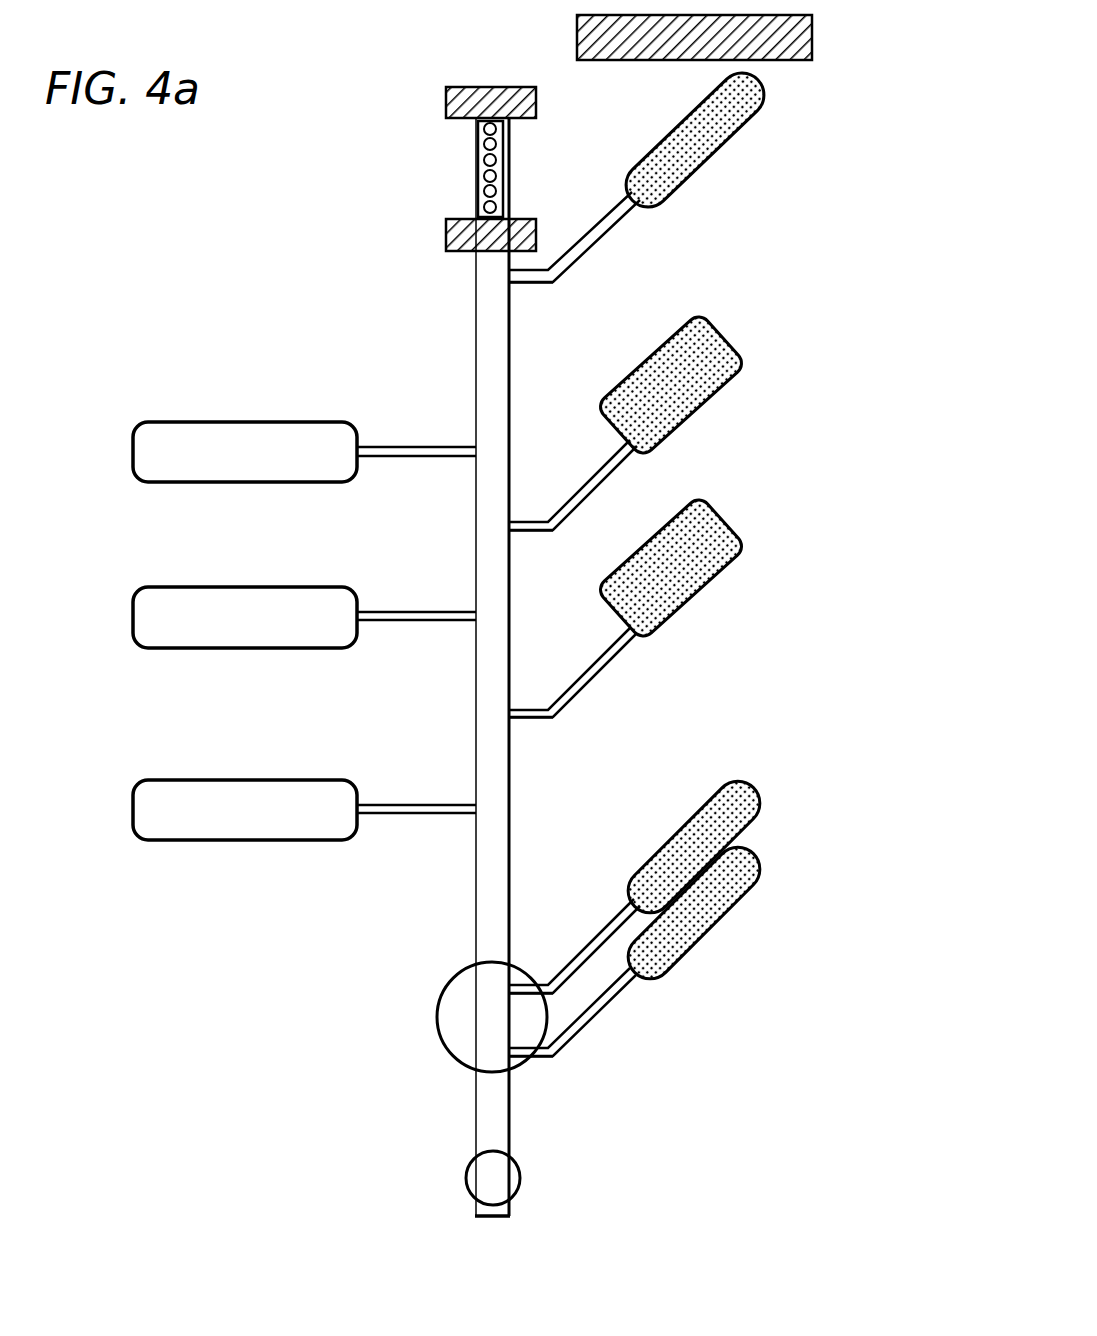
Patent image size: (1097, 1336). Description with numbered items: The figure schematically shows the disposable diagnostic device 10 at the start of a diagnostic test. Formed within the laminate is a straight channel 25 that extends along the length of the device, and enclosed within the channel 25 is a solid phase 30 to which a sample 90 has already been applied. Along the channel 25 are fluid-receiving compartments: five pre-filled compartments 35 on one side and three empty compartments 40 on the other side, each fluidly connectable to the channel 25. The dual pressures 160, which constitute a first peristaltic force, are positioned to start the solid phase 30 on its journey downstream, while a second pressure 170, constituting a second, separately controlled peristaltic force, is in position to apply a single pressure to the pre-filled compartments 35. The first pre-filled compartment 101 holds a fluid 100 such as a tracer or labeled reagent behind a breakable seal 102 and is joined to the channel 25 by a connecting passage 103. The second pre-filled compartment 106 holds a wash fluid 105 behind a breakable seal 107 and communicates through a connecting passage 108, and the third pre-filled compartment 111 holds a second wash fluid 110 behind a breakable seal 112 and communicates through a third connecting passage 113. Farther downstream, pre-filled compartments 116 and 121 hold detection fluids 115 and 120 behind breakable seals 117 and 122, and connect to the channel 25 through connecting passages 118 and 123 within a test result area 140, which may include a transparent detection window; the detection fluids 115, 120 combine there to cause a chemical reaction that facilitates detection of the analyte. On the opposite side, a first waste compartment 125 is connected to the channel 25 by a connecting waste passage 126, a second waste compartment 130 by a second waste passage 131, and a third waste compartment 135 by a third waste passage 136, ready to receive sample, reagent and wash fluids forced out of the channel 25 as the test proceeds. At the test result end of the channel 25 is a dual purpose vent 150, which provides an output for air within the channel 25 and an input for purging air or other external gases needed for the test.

The disposable diagnostic device 10 is at (290, 258).
The channel 25 is at (475, 332).
The solid phase 30 is at (496, 143).
The pre-filled compartment 35 is at (762, 83).
The empty compartment 40 is at (203, 422).
The sample 90 is at (498, 181).
The fluid 100 is at (735, 118).
The first pre-filled compartment 101 is at (708, 152).
The breakable seal 102 is at (578, 258).
The connecting passage 103 is at (531, 284).
The fluid 105 is at (708, 386).
The second pre-filled compartment 106 is at (690, 424).
The breakable seal 107 is at (580, 494).
The connecting passage 108 is at (531, 532).
The wash fluid 110 is at (708, 570).
The third pre-filled compartment 111 is at (690, 610).
The breakable seal 112 is at (582, 682).
The third connecting passage 113 is at (531, 719).
The detection fluid 115 is at (748, 790).
The pre-filled compartment 116 is at (712, 812).
The breakable seal 117 is at (583, 956).
The connecting passage 118 is at (545, 984).
The detection fluid 120 is at (736, 885).
The pre-filled compartment 121 is at (702, 942).
The breakable seal 122 is at (582, 1030).
The connecting passage 123 is at (545, 1058).
The first waste compartment 125 is at (150, 450).
The connecting waste passage 126 is at (416, 458).
The second waste compartment 130 is at (150, 620).
The second waste passage 131 is at (416, 622).
The third waste compartment 135 is at (150, 810).
The third waste passage 136 is at (416, 815).
The test result area 140 is at (440, 992).
The dual purpose vent 150 is at (466, 1172).
The dual pressures 160 is at (446, 228).
The second pressure 170 is at (812, 35).